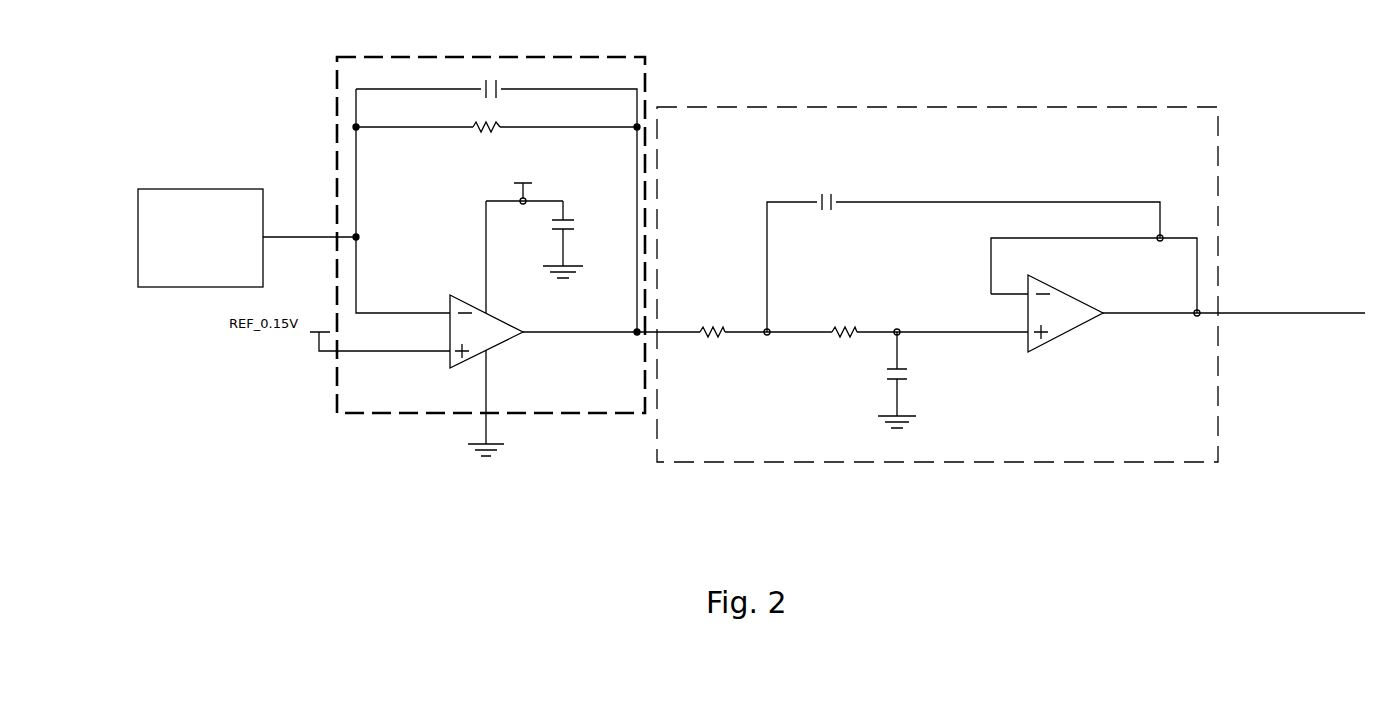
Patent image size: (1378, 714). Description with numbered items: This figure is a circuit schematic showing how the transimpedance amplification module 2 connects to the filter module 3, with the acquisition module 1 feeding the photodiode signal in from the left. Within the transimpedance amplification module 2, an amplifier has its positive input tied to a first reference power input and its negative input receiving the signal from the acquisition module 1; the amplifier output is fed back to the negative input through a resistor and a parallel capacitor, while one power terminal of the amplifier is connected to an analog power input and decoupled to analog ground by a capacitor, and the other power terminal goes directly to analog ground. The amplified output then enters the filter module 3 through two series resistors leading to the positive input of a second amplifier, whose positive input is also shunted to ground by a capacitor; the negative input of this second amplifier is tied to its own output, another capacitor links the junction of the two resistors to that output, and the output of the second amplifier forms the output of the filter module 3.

The acquisition module 1 is at (263, 189).
The transimpedance amplification module 2 is at (644, 57).
The filter module 3 is at (1218, 107).